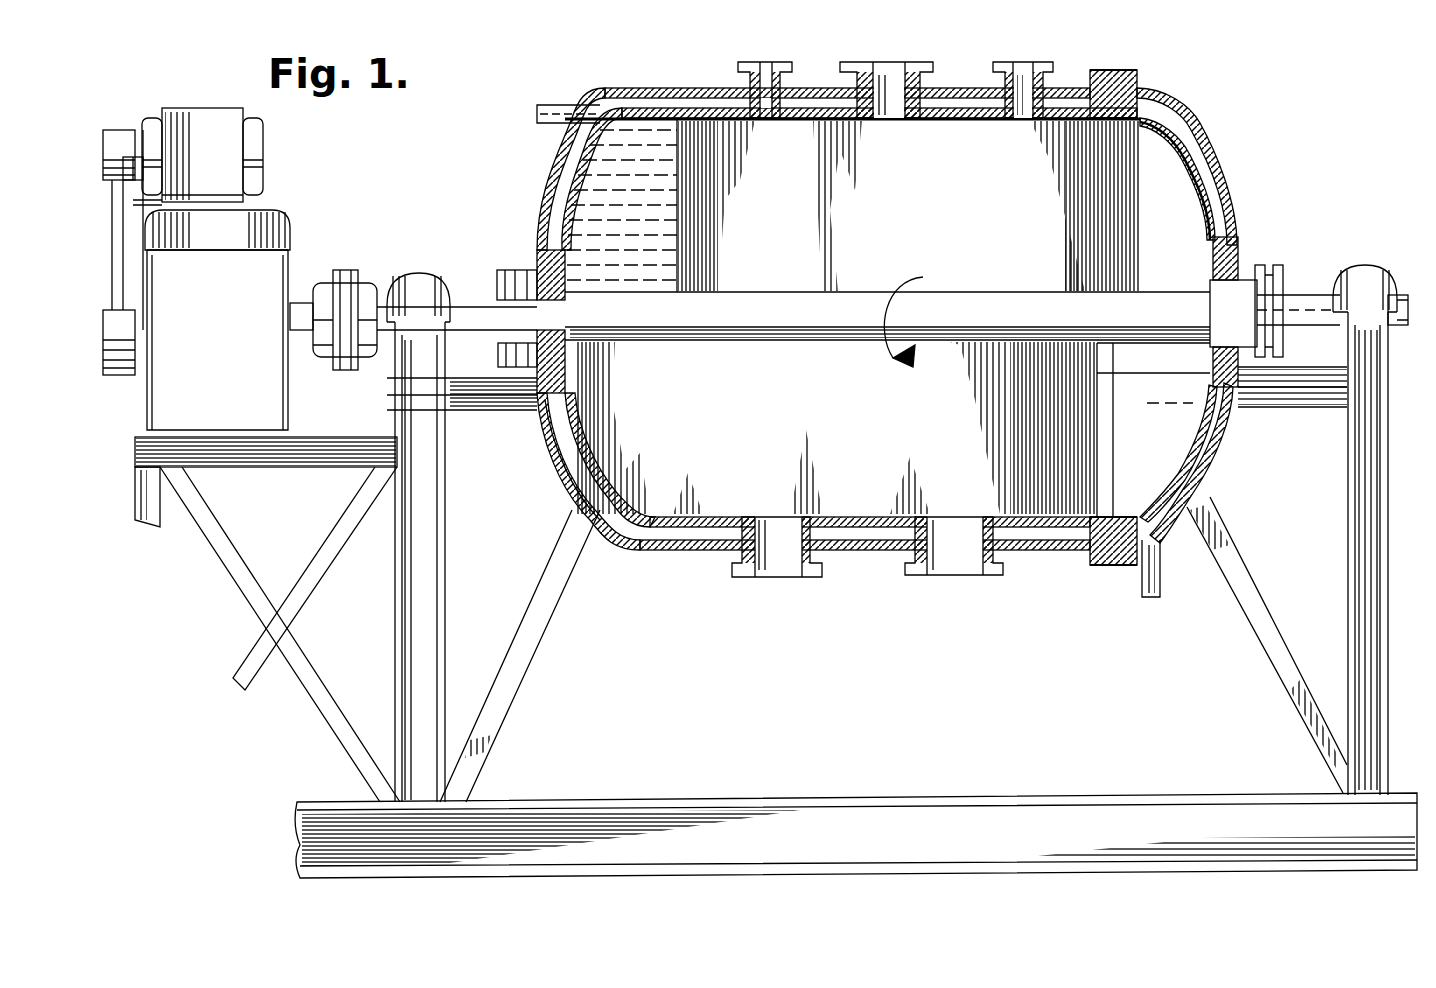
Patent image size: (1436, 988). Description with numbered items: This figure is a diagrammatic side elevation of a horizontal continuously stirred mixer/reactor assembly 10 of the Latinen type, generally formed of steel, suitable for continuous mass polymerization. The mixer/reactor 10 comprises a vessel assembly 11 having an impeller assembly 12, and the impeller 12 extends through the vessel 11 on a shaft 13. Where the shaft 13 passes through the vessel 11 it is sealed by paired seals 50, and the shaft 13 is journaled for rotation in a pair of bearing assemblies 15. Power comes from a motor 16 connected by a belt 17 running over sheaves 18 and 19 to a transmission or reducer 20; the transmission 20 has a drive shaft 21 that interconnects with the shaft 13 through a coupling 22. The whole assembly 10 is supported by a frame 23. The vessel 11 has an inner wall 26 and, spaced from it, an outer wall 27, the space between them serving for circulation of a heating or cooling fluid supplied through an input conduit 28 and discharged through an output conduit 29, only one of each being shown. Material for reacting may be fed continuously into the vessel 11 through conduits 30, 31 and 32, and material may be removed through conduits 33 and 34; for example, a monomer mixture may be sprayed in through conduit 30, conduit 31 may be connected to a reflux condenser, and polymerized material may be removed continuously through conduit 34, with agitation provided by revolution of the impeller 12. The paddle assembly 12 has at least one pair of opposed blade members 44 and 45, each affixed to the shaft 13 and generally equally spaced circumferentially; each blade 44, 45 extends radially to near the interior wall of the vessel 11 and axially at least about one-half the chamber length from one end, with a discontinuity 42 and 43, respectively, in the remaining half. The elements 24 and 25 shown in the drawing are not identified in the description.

The mixer/reactor assembly 10 is at (1212, 152).
The vessel assembly 11 is at (662, 82).
The impeller assembly 12 is at (690, 263).
The shaft 13 is at (480, 310).
The bearing assemblies 15 is at (421, 282).
The motor 16 is at (193, 112).
The belt 17 is at (160, 205).
The sheave 18 is at (105, 130).
The sheave 19 is at (128, 375).
The transmission or reducer 20 is at (237, 315).
The drive shaft 21 is at (302, 303).
The coupling 22 is at (355, 270).
The frame 23 is at (525, 672).
The base beam 24 is at (856, 835).
The motor platform 25 is at (266, 482).
The inner wall 26 is at (578, 443).
The outer wall 27 is at (572, 485).
The input conduit 28 is at (537, 113).
The output conduit 29 is at (1151, 598).
The conduit 30 is at (765, 62).
The conduit 31 is at (882, 80).
The conduit 32 is at (1023, 62).
The conduit 33 is at (780, 580).
The conduit 34 is at (955, 560).
The discontinuity 42 is at (608, 182).
The discontinuity 43 is at (1163, 462).
The blade member 44 is at (815, 226).
The blade member 45 is at (790, 428).
The seals 50 is at (530, 280).